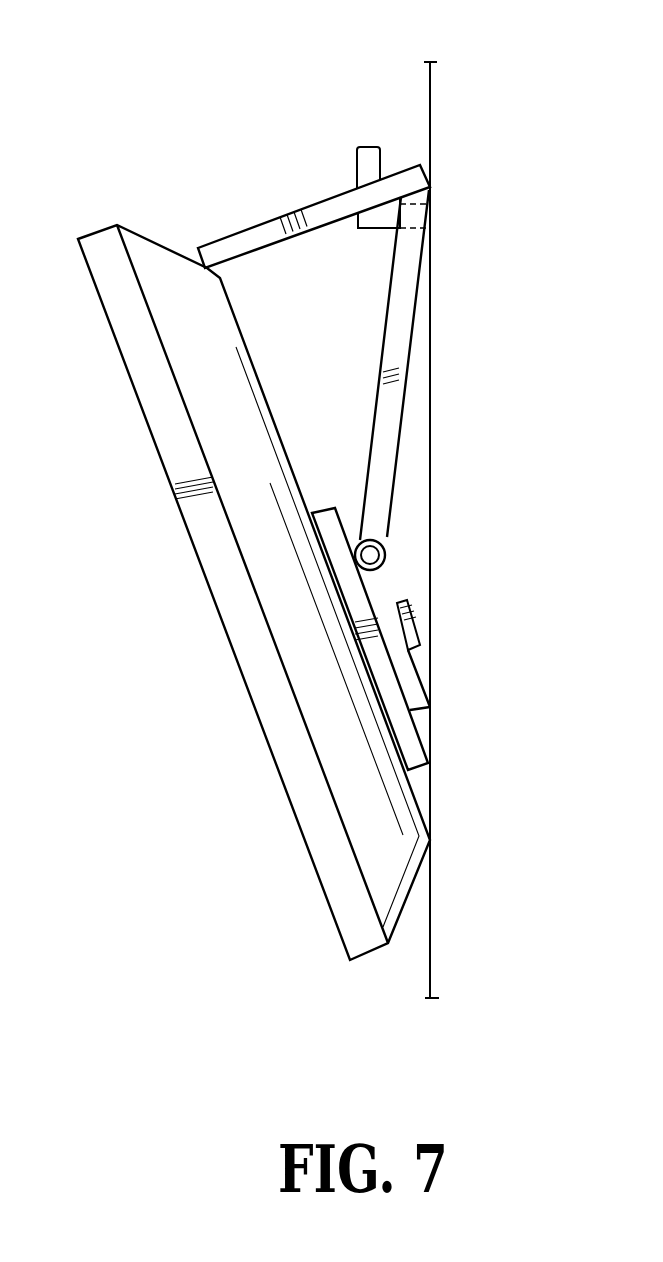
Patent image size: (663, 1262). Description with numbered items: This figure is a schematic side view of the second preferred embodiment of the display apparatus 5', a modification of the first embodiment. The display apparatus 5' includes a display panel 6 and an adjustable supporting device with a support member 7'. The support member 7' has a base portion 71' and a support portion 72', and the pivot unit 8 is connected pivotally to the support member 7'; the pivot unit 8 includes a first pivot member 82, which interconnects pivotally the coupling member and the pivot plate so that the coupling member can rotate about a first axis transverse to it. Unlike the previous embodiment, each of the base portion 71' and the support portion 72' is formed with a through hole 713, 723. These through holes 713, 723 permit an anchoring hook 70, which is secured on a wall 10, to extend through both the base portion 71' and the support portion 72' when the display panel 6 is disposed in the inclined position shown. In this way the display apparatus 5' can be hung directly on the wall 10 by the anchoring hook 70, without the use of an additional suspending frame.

The display apparatus 5' is at (293, 484).
The display panel 6 is at (127, 373).
The support member 7' is at (368, 389).
The base portion 71' is at (295, 193).
The support portion 72' is at (454, 380).
The anchoring hook 70 is at (367, 157).
The through hole 713 is at (357, 217).
The through hole 723 is at (398, 237).
The wall 10 is at (430, 127).
The pivot unit 8 is at (403, 560).
The first pivot member 82 is at (420, 640).